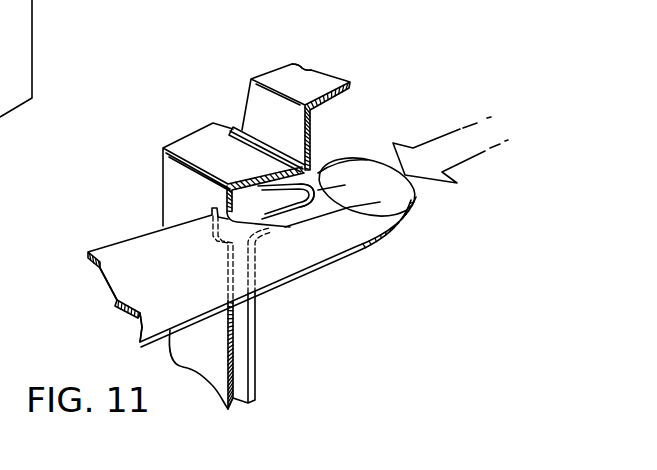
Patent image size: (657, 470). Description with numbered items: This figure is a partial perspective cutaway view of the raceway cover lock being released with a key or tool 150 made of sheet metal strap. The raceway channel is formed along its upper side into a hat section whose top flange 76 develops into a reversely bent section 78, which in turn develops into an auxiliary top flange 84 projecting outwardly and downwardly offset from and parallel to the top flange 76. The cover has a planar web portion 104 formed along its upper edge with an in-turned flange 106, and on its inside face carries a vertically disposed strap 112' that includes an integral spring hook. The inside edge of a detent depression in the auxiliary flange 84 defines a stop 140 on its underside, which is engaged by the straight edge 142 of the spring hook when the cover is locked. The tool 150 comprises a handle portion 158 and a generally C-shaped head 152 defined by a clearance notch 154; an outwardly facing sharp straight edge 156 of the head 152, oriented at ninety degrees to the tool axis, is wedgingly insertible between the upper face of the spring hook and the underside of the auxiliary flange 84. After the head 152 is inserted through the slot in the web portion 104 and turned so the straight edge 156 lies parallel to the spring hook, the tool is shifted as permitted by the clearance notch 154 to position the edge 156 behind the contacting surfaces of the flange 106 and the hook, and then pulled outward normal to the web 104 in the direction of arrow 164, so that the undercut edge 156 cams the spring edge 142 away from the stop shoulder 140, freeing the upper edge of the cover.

The top flange 76 is at (303, 70).
The reversely bent section 78 is at (250, 95).
The auxiliary top flange 84 is at (231, 128).
The in-turned flange 106 is at (194, 131).
The stop 140 is at (268, 192).
The straight edge 142 is at (303, 193).
The tool 150 is at (108, 240).
The handle portion 158 is at (186, 258).
The straight edge 156 is at (410, 212).
The clearance notch 154 is at (345, 172).
The tool head 152 is at (318, 190).
The directional arrow 164 is at (442, 132).
The strap 112' is at (279, 312).
The web portion 104 is at (213, 378).